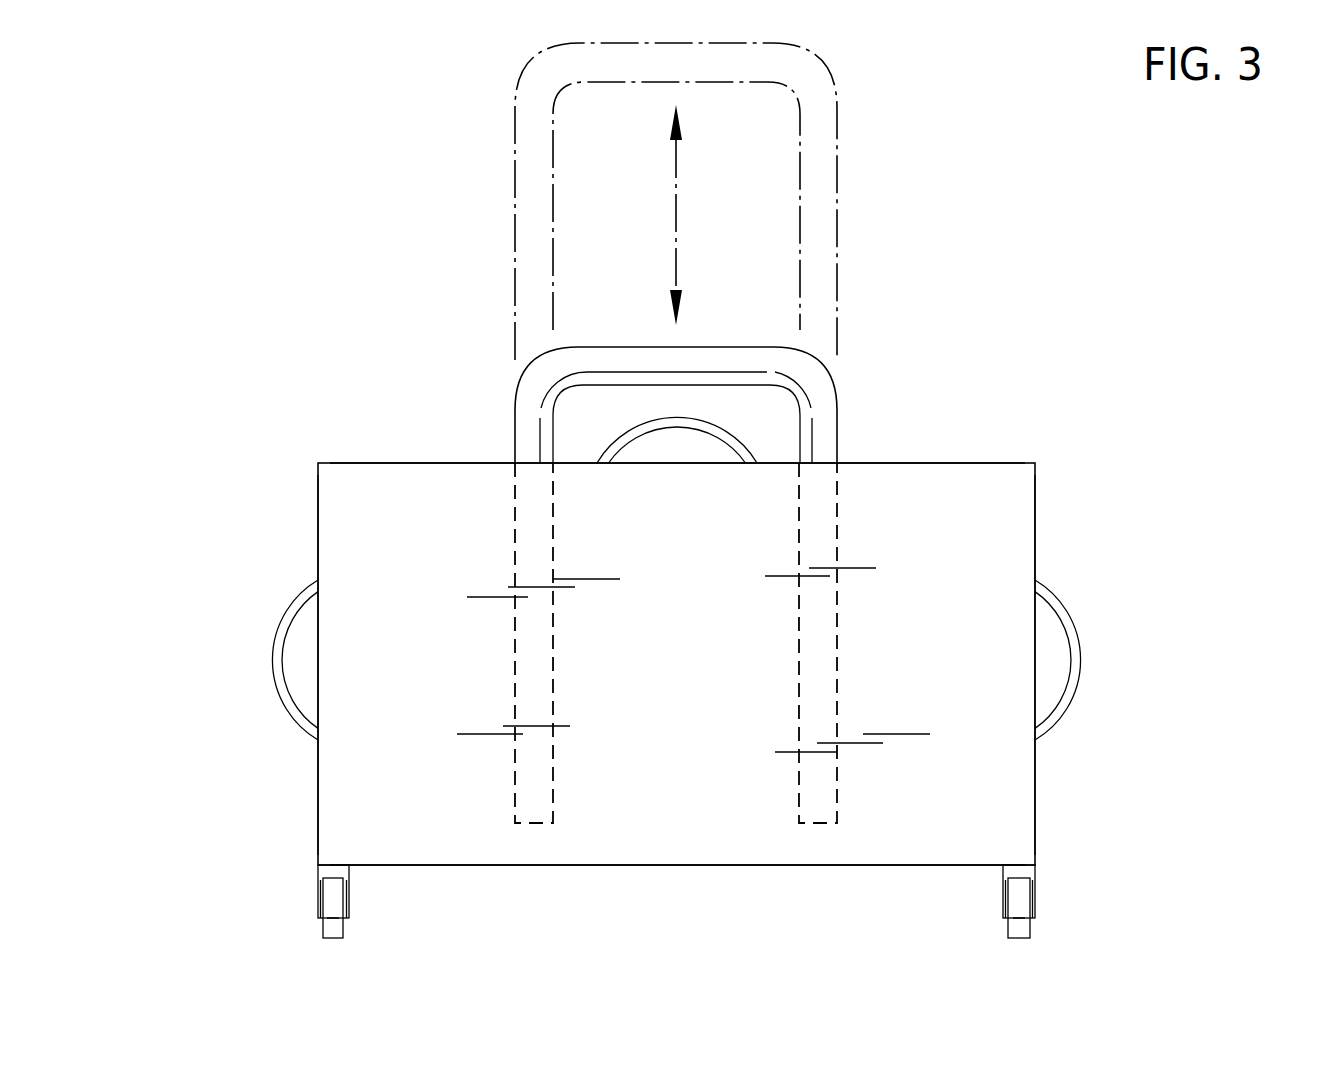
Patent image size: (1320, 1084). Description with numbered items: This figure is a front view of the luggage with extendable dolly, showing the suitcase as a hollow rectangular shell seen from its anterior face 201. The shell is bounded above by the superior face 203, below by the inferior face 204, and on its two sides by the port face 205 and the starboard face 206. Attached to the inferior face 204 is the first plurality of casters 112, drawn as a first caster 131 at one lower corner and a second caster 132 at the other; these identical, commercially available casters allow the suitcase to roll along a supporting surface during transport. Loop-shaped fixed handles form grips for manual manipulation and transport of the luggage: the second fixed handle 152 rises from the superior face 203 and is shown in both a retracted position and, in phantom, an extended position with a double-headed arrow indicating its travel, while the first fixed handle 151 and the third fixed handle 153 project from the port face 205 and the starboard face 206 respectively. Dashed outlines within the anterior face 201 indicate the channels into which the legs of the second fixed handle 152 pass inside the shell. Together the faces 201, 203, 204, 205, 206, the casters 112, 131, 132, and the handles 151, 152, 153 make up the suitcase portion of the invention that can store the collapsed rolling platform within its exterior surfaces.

The first plurality of casters 112 is at (1003, 895).
The first caster 131 is at (1025, 930).
The second caster 132 is at (343, 930).
The first fixed handle 151 is at (1080, 640).
The second fixed handle 152 is at (745, 447).
The third fixed handle 153 is at (282, 623).
The anterior face 201 is at (965, 522).
The superior face 203 is at (970, 463).
The inferior face 204 is at (833, 868).
The port face 205 is at (1035, 533).
The starboard face 206 is at (318, 518).